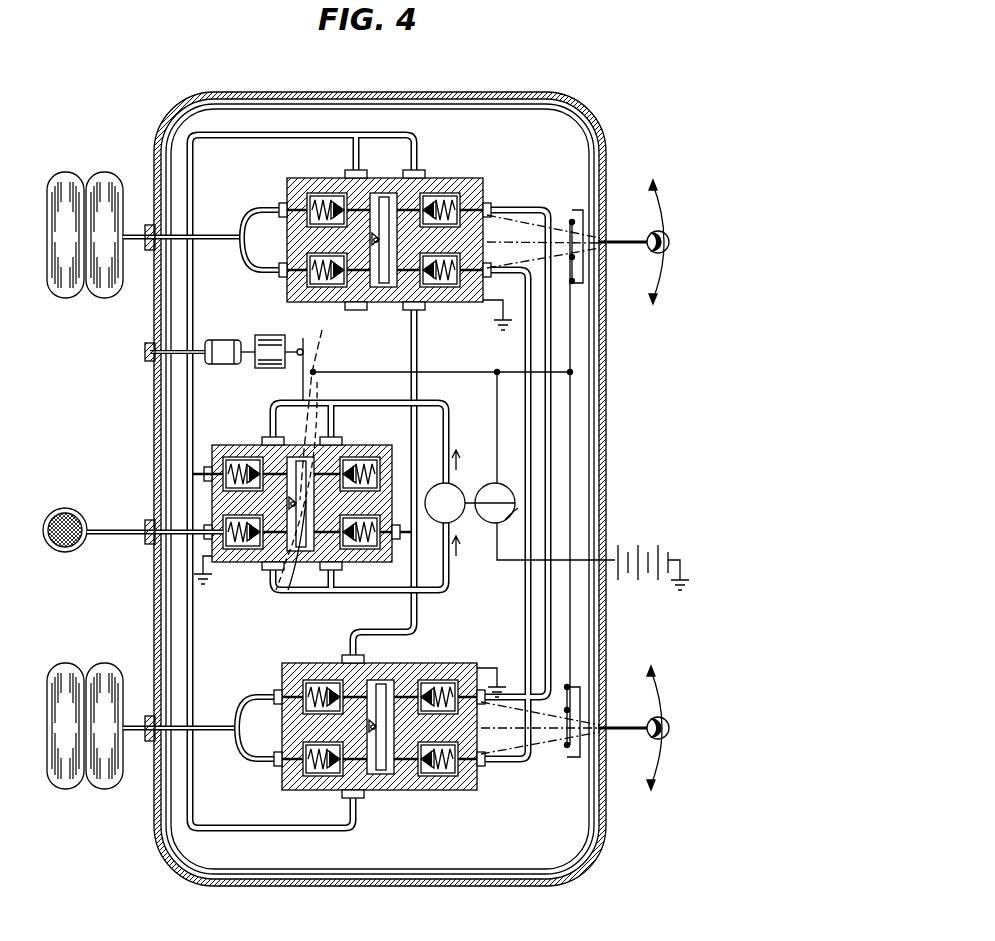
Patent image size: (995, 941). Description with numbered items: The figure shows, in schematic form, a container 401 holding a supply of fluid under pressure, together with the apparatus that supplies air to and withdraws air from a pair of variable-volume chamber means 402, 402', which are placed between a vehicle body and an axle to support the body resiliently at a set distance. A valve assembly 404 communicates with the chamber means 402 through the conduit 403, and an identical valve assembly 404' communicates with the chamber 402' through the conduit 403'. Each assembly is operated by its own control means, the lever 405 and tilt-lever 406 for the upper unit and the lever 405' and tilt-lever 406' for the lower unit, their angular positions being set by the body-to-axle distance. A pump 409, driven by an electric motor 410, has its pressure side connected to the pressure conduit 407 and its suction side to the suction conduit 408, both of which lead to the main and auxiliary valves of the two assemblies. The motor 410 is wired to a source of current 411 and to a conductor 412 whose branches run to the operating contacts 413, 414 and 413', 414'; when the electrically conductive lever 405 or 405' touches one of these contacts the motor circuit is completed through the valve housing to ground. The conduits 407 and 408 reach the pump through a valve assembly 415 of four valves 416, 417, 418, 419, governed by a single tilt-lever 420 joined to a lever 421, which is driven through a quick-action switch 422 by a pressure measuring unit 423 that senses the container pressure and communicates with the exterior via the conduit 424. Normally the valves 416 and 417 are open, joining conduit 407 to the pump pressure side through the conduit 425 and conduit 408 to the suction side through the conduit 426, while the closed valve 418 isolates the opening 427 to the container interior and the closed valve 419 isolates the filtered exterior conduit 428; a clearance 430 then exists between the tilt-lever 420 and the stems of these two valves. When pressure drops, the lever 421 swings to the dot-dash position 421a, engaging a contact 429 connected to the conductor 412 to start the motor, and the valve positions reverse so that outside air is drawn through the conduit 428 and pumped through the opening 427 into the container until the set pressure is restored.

The container 401 is at (605, 160).
The variable-volume chamber means 402 is at (85, 219).
The variable-volume chamber means 402' is at (85, 743).
The conduit 403 is at (201, 260).
The conduit 403' is at (191, 693).
The valve assembly 404 is at (395, 239).
The valve assembly 404' is at (390, 739).
The control lever 405 is at (633, 242).
The control lever 405' is at (633, 728).
The tilt-lever 406 is at (383, 218).
The tilt-lever 406' is at (385, 754).
The pressure conduit 407 is at (188, 408).
The suction conduit 408 is at (412, 358).
The pump 409 is at (455, 522).
The electric motor 410 is at (484, 474).
The source of current 411 is at (640, 582).
The conductor 412 is at (497, 372).
The operating contact 413 is at (554, 228).
The operating contact 413' is at (552, 740).
The operating contact 414 is at (566, 248).
The operating contact 414' is at (562, 716).
The valve assembly 415 is at (178, 504).
The valve 416 is at (234, 460).
The valve 417 is at (362, 550).
The valve 418 is at (350, 456).
The valve 419 is at (240, 552).
The tilt-lever 420 is at (306, 551).
The lever 421 is at (300, 386).
The dot-dash line position 421a is at (321, 342).
The quick-action switch 422 is at (272, 334).
The pressure measuring unit 423 is at (236, 332).
The conduit 424 is at (160, 344).
The conduit 425 is at (450, 394).
The conduit 426 is at (420, 592).
The opening 427 is at (382, 460).
The conduit 428 is at (68, 552).
The contact 429 is at (313, 374).
The clearance 430 is at (318, 384).